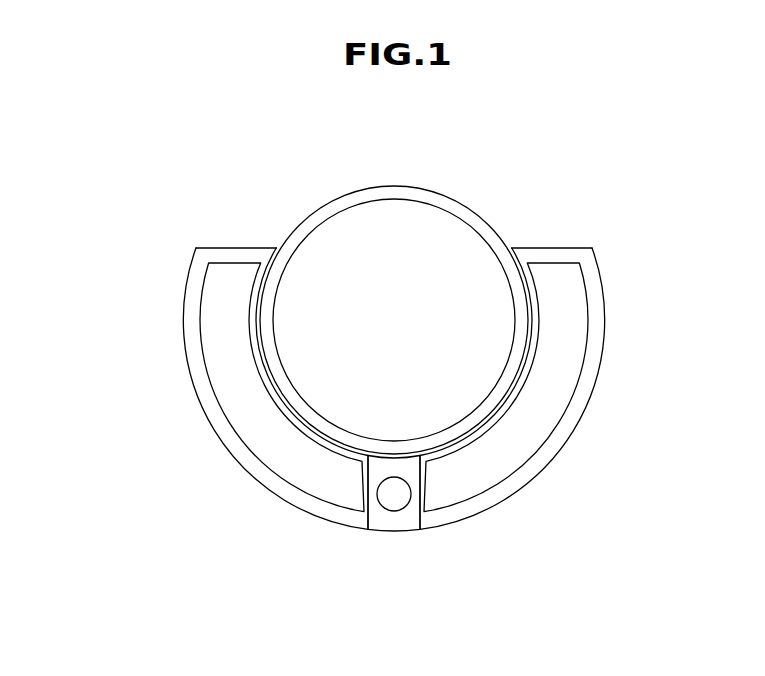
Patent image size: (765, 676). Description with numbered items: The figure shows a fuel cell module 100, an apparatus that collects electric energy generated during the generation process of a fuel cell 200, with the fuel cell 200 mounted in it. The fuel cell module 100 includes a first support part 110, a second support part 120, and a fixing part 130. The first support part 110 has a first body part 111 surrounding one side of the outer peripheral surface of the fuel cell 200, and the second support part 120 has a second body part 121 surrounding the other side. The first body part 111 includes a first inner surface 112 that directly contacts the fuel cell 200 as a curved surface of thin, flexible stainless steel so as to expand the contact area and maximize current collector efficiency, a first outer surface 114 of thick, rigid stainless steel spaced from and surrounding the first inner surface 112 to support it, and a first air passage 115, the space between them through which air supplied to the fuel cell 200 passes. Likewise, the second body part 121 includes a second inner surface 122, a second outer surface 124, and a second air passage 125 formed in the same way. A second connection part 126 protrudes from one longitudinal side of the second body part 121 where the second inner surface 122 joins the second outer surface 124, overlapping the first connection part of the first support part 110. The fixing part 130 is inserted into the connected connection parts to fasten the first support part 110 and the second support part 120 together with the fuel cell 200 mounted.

The fuel cell module 100 is at (584, 225).
The first support part 110 is at (305, 530).
The first body part 111 is at (102, 295).
The first inner surface 112 is at (250, 338).
The first outer surface 114 is at (190, 301).
The first air passage 115 is at (237, 393).
The second support part 120 is at (485, 530).
The second body part 121 is at (684, 297).
The second inner surface 122 is at (540, 338).
The second outer surface 124 is at (598, 300).
The second air passage 125 is at (550, 393).
The second connection part 126 is at (412, 520).
The fixing part 130 is at (394, 525).
The fuel cell 200 is at (392, 197).